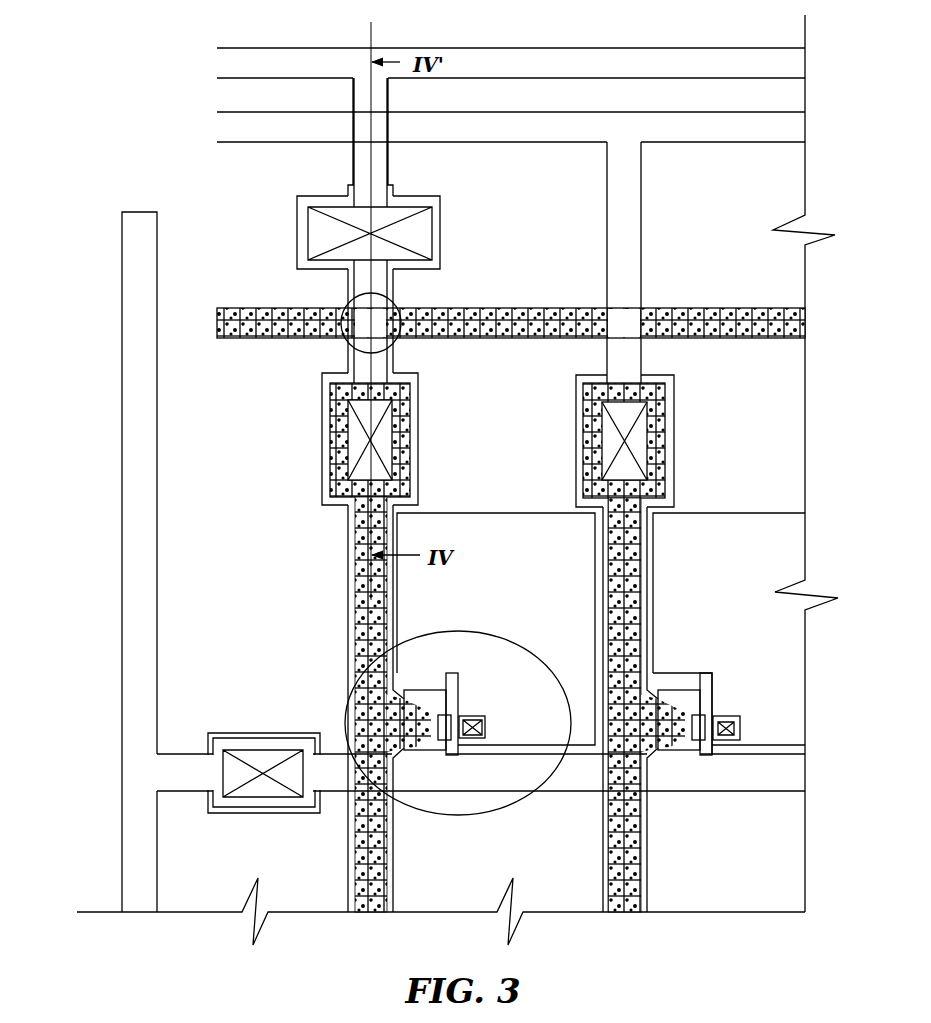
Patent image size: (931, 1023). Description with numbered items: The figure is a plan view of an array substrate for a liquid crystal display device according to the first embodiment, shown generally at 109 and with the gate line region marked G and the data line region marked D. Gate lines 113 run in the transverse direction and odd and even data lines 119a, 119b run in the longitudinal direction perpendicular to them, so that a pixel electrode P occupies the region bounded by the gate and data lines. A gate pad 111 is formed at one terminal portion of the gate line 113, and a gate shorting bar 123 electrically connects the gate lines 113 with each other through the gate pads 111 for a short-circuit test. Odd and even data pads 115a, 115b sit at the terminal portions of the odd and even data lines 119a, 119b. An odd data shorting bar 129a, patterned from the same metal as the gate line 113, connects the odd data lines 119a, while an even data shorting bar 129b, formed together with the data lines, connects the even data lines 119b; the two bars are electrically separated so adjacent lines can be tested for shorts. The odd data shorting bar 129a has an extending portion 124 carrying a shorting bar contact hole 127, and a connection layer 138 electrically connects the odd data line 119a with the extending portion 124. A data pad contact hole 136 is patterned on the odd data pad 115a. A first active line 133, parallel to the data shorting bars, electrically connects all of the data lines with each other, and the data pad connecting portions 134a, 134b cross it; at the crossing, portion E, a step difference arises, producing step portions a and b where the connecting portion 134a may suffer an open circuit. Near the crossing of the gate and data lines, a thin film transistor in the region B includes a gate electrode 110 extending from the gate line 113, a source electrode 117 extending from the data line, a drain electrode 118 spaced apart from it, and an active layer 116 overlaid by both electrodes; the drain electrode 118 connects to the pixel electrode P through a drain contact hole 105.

The drain contact hole 105 is at (458, 759).
The substrate 109 is at (149, 139).
The gate electrode 110 is at (460, 697).
The gate pad 111 is at (228, 738).
The gate line 113 is at (583, 742).
The odd data pad 115a is at (373, 439).
The even data pad 115b is at (665, 441).
The active layer 116 is at (430, 732).
The source electrode 117 is at (430, 707).
The drain electrode 118 is at (482, 727).
The odd data line 119a is at (355, 660).
The even data line 119b is at (603, 605).
The gate shorting bar 123 is at (121, 799).
The extending portion 124 is at (440, 242).
The shorting bar contact hole 127 is at (432, 225).
The odd data shorting bar 129a is at (516, 48).
The even data shorting bar 129b is at (262, 112).
The first active line 133 is at (578, 308).
The data pad connecting portion 134a is at (388, 285).
The second connection line 134b is at (641, 262).
The data pad contact hole 136 is at (350, 425).
The connection layer 138 is at (418, 413).
The portion E is at (395, 340).
The step portion a is at (352, 306).
The step portion b is at (355, 343).
The data line D is at (333, 704).
The gate line G is at (339, 748).
The pixel electrode P is at (539, 511).
The TFT region B is at (480, 817).